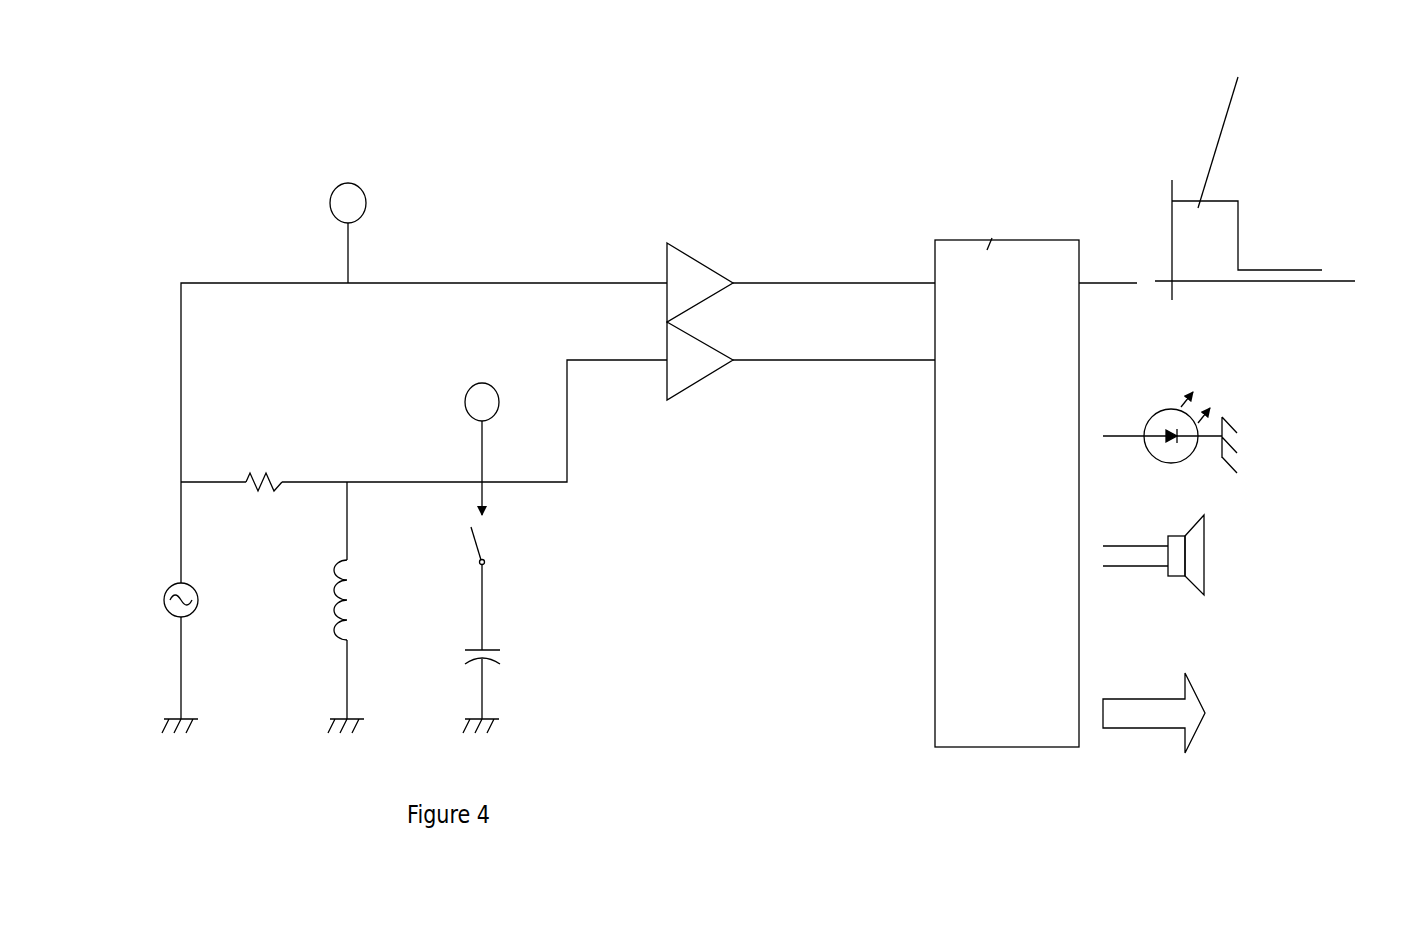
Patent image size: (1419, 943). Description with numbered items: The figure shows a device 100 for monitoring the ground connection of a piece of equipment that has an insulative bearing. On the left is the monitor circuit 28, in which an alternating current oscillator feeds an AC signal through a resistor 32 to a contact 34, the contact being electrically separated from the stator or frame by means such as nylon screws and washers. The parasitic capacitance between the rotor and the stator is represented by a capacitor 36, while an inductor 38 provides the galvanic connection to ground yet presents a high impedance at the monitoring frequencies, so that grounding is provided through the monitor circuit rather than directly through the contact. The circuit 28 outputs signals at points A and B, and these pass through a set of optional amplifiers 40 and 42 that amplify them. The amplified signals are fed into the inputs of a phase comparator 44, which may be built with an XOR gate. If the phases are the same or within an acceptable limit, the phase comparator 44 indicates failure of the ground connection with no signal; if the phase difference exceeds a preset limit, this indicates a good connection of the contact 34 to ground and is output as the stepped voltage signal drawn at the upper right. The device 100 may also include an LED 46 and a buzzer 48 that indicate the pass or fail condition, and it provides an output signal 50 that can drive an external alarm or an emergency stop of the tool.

The circuit 28 is at (451, 192).
The resistor 32 is at (255, 460).
The contact 34 is at (484, 538).
The capacitor 36 is at (500, 655).
The inductor 38 is at (345, 620).
The amplifier 40 is at (693, 260).
The amplifier 42 is at (700, 400).
The phase comparator 44 is at (972, 240).
The LED 46 is at (1173, 397).
The buzzer 48 is at (1213, 553).
The output signal 50 is at (1196, 690).
The device 100 is at (720, 134).